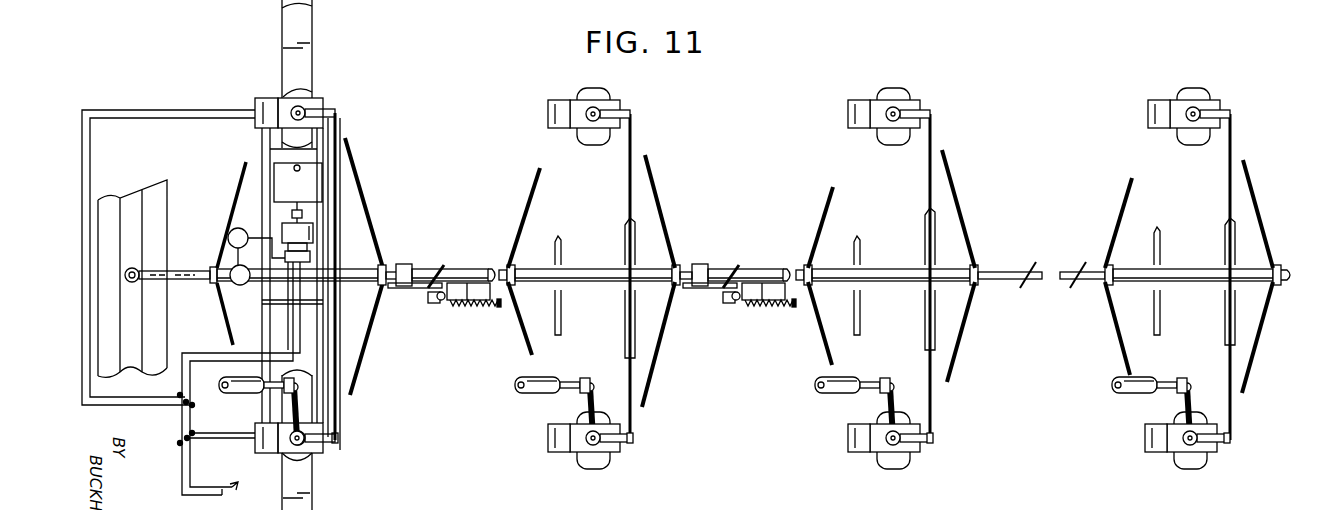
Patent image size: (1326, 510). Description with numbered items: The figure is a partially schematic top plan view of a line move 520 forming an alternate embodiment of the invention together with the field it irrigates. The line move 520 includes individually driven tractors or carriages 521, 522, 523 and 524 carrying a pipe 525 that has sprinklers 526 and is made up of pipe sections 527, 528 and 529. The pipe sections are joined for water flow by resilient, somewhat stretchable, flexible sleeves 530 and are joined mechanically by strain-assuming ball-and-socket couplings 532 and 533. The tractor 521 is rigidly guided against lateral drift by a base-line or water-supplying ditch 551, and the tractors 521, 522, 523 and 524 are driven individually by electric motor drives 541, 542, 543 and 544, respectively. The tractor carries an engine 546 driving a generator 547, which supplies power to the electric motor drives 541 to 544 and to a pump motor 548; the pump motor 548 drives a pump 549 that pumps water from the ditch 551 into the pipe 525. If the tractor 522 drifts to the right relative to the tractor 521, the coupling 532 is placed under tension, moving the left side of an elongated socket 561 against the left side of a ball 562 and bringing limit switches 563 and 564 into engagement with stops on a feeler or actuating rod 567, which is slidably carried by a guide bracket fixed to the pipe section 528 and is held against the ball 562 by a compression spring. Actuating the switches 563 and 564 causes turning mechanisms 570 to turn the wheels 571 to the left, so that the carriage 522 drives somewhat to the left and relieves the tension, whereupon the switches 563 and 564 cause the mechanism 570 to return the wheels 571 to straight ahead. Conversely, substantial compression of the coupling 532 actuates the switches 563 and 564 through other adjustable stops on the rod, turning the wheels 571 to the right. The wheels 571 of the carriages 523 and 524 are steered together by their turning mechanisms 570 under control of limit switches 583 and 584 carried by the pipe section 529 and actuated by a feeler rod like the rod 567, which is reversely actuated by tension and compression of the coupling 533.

The line move 520 is at (250, 58).
The tractor 521 is at (371, 155).
The tractor 522 is at (667, 147).
The tractor 523 is at (967, 147).
The tractor 524 is at (1256, 155).
The pipe 525 is at (458, 263).
The sprinklers 526 is at (440, 264).
The pipe section 527 is at (166, 262).
The pipe section 528 is at (486, 267).
The pipe section 529 is at (1040, 262).
The flexible sleeves 530 is at (400, 262).
The ball-and-socket coupling 532 is at (468, 340).
The ball-and-socket coupling 533 is at (752, 338).
The electric motor drive 541 is at (256, 107).
The electric motor drive 542 is at (548, 110).
The electric motor drive 543 is at (848, 112).
The electric motor drive 544 is at (1145, 123).
The engine 546 is at (290, 180).
The generator 547 is at (283, 228).
The pump motor 548 is at (221, 238).
The pump 549 is at (229, 286).
The water-supplying ditch 551 is at (137, 200).
The elongated socket 561 is at (435, 305).
The ball 562 is at (436, 296).
The limit switch 563 is at (458, 304).
The limit switch 564 is at (476, 308).
The feeler rod 567 is at (446, 308).
The turning mechanism 570 is at (257, 392).
The wheels 571 is at (305, 88).
The limit switch 583 is at (752, 305).
The limit switch 584 is at (766, 306).